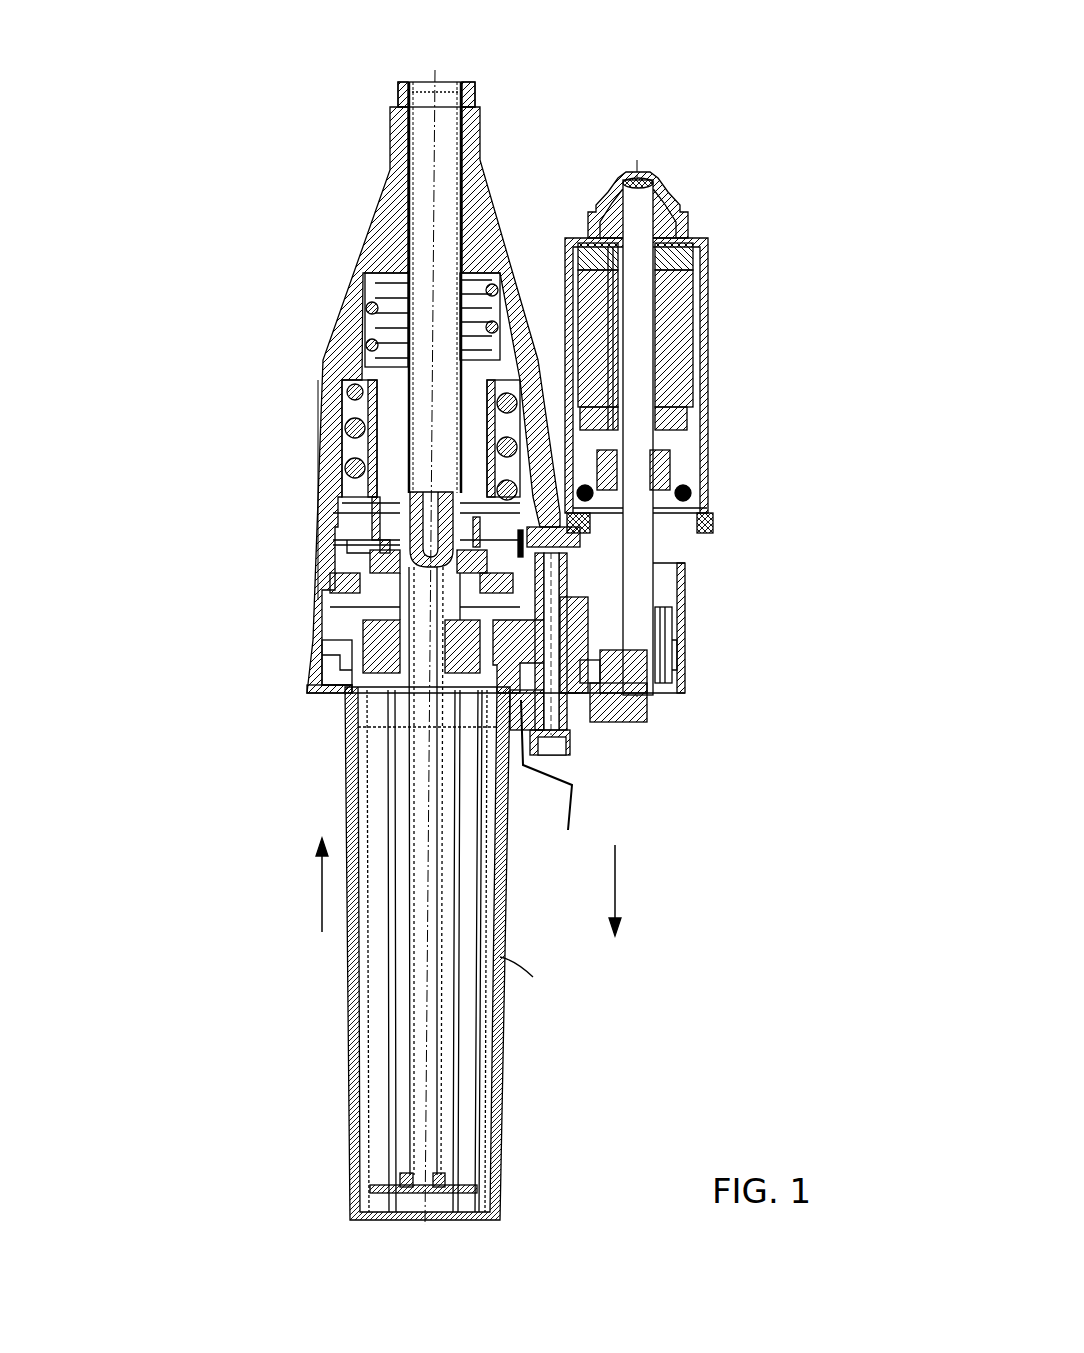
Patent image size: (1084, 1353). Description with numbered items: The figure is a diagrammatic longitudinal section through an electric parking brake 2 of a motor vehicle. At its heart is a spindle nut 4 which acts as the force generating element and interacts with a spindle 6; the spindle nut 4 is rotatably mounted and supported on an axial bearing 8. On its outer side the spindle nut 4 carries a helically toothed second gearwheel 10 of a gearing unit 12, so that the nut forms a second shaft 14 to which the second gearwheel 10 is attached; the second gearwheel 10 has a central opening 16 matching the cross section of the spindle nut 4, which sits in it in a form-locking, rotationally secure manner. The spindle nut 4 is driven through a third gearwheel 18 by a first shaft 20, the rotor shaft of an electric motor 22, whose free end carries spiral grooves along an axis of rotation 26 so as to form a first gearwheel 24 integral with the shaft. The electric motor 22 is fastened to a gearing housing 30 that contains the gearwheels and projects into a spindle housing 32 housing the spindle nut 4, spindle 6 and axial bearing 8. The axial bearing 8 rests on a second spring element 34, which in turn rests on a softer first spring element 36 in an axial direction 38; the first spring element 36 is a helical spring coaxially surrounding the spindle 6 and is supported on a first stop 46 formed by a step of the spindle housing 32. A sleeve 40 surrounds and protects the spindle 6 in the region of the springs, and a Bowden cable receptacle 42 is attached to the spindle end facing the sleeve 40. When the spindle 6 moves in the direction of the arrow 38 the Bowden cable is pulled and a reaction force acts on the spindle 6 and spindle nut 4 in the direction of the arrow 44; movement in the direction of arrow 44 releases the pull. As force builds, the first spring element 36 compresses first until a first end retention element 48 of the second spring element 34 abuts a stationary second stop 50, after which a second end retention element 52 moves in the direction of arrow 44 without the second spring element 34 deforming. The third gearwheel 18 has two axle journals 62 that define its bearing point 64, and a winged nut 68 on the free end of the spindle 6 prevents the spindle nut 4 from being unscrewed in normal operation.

The electric parking brake 2 is at (808, 94).
The spindle nut 4 is at (327, 693).
The spindle 6 is at (440, 870).
The axial bearing 8 is at (327, 582).
The second gearwheel 10 is at (517, 710).
The gearing unit 12 is at (607, 727).
The second shaft 14 is at (295, 706).
The opening 16 is at (307, 627).
The third gearwheel 18 is at (625, 690).
The first shaft 20 is at (657, 617).
The electric motor 22 is at (680, 313).
The first gearwheel 24 is at (687, 680).
The axis of rotation 26 is at (640, 590).
The gearing housing 30 is at (687, 657).
The spindle housing 32 is at (487, 190).
The second spring element 34 is at (320, 420).
The first spring element 36 is at (473, 318).
The axial direction 38 is at (615, 890).
The sleeve 40 is at (462, 203).
The Bowden cable receptacle 42 is at (320, 540).
The arrow 44 is at (322, 880).
The first stop 46 is at (380, 263).
The first end retention element 48 is at (320, 397).
The second stop 50 is at (320, 365).
The second end retention element 52 is at (320, 483).
The axle journals 62 is at (713, 530).
The bearing point 64 is at (563, 593).
The winged nut 68 is at (378, 1213).